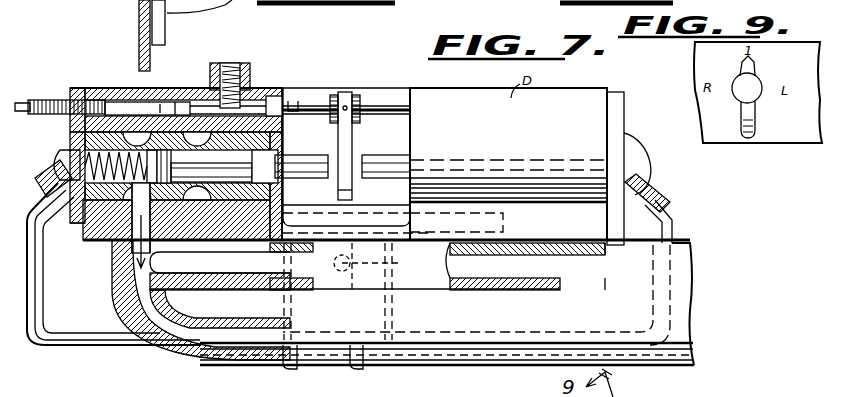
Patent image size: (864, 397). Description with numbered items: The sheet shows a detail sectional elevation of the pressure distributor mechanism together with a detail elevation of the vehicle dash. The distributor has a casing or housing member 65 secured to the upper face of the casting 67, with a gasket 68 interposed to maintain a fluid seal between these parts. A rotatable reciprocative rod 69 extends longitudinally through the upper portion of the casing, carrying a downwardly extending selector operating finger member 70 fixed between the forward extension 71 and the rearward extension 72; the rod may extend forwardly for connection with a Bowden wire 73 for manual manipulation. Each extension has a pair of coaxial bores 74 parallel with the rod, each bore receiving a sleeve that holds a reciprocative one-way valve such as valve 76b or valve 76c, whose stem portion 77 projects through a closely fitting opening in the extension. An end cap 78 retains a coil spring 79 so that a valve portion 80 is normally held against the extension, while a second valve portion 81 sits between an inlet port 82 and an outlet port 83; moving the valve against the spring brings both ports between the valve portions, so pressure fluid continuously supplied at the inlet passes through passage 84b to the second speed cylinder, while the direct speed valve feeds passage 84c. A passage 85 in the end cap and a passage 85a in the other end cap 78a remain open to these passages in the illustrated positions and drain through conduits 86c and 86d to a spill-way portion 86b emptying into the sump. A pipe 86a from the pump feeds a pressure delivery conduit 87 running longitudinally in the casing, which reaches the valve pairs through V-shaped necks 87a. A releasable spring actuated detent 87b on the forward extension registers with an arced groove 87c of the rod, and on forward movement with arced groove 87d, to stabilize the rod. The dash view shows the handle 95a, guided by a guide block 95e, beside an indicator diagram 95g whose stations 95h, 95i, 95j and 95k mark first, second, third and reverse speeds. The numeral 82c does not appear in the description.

In FIG. 7, the casing or housing member 65 is at (600, 126).
In FIG. 7, the casting 67 is at (288, 368).
In FIG. 7, the gasket 68 is at (661, 203).
In FIG. 7, the rotatable reciprocative rod 69 is at (361, 100).
In FIG. 7, the selector operating finger member 70 is at (352, 190).
In FIG. 7, the forward extension 71 is at (195, 88).
In FIG. 7, the rearward extension 72 is at (451, 97).
In FIG. 7, the Bowden wire 73 is at (36, 103).
In FIG. 7, the coaxial bores 74 is at (72, 132).
In FIG. 7, the reciprocative one-way valve 76b is at (297, 176).
In FIG. 7, the reciprocative one-way valve 76c is at (408, 169).
In FIG. 7, the stem portion 77 is at (398, 152).
In FIG. 7, the end cap 78 is at (284, 142).
In FIG. 7, the end cap 78a is at (616, 93).
In FIG. 7, the coil spring 79 is at (62, 160).
In FIG. 7, the valve portion 80 is at (276, 96).
In FIG. 7, the second valve portion 81 is at (166, 108).
In FIG. 7, the inlet port 82 is at (257, 180).
In FIG. 7, the plunger head 82c is at (213, 158).
In FIG. 7, the outlet port 83 is at (108, 257).
In FIG. 7, the passage 84b is at (145, 315).
In FIG. 7, the passage 84c is at (185, 270).
In FIG. 7, the passage or conduit 85 is at (45, 172).
In FIG. 7, the passage 85a is at (645, 190).
In FIG. 7, the pipe 86a is at (392, 262).
In FIG. 7, the spill-way portion 86b is at (356, 368).
In FIG. 7, the conduit 86c is at (35, 287).
In FIG. 7, the conduit 86d is at (669, 237).
In FIG. 7, the pressure delivery conduit 87 is at (338, 291).
In FIG. 7, the V-shaped necks 87a is at (143, 214).
In FIG. 7, the releasable spring actuated detent 87b is at (240, 80).
In FIG. 7, the arced groove 87c is at (177, 140).
In FIG. 7, the arced groove 87d is at (300, 96).
In FIG. 9, the handle 95a is at (757, 114).
In FIG. 9, the guide block 95e is at (760, 72).
In FIG. 9, the indicator diagram 95g is at (703, 57).
In FIG. 9, the station 95h is at (755, 52).
In FIG. 9, the station 95i is at (792, 86).
In FIG. 9, the station 95j is at (750, 132).
In FIG. 9, the station 95k is at (702, 90).